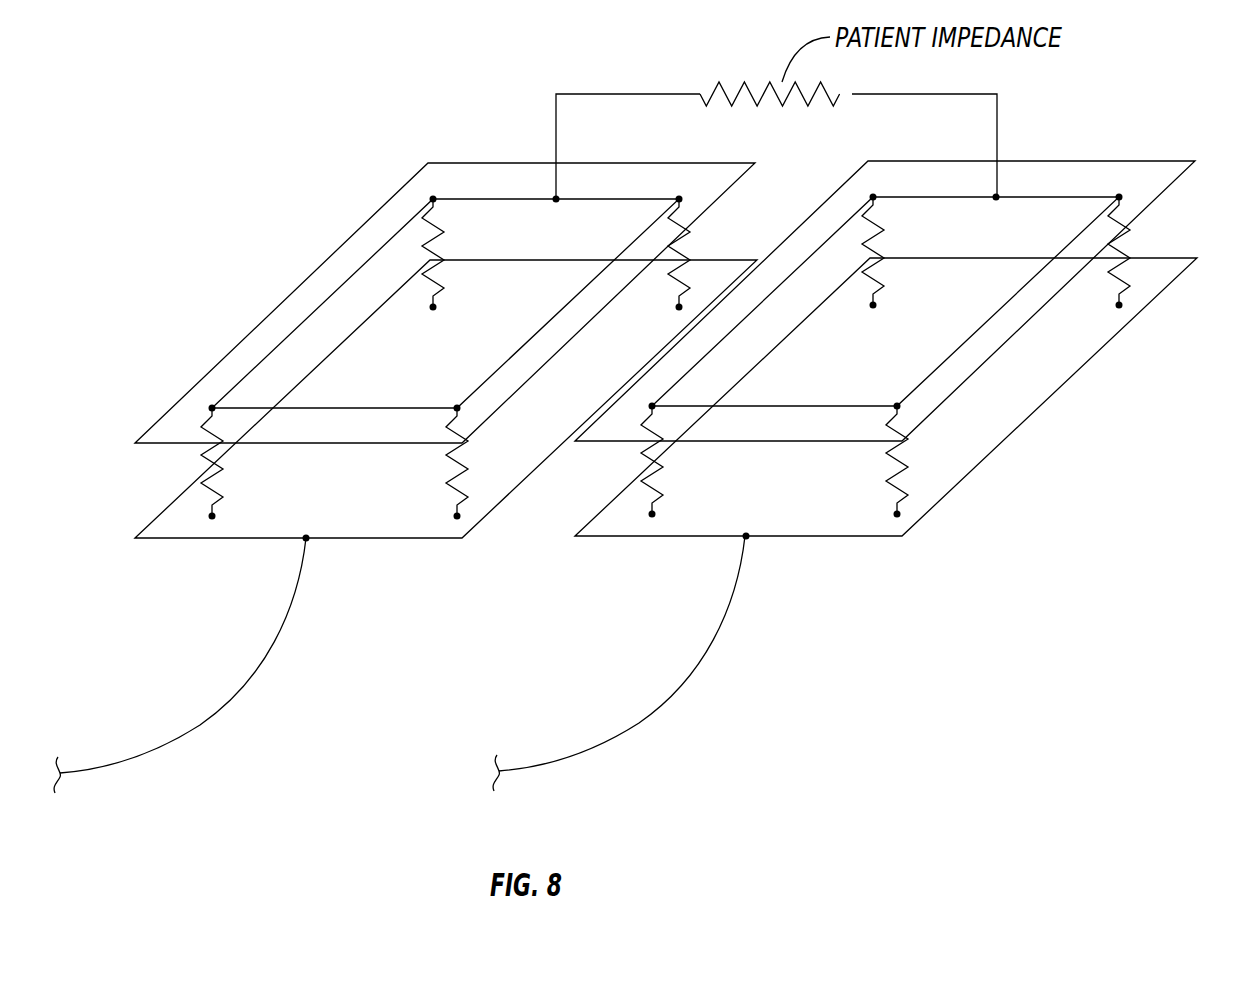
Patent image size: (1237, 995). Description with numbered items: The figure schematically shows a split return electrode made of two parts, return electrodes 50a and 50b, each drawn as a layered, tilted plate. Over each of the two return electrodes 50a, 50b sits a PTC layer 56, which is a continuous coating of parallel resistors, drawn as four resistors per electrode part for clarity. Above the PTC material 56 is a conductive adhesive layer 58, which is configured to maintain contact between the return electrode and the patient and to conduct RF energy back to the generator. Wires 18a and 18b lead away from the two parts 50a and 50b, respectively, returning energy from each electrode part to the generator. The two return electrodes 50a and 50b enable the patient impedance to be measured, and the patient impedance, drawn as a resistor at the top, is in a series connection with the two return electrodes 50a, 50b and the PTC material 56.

The return electrode part 50a is at (434, 369).
The return electrode part 50b is at (847, 538).
The conductive adhesive layer 58 is at (229, 351).
The PTC layer 56 is at (205, 457).
The wire 18a is at (277, 630).
The wire 18b is at (716, 628).